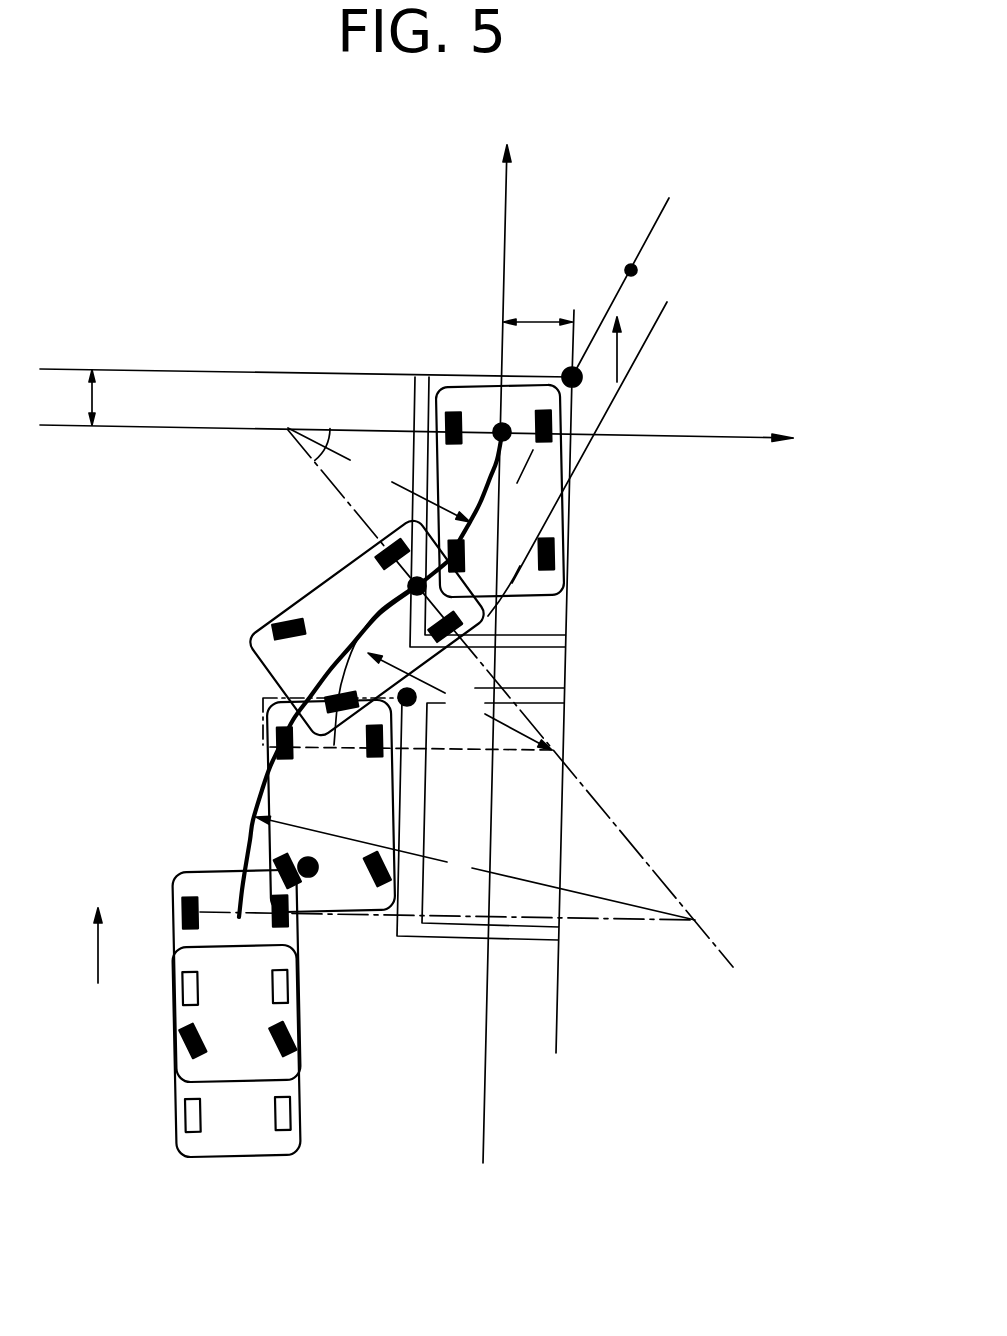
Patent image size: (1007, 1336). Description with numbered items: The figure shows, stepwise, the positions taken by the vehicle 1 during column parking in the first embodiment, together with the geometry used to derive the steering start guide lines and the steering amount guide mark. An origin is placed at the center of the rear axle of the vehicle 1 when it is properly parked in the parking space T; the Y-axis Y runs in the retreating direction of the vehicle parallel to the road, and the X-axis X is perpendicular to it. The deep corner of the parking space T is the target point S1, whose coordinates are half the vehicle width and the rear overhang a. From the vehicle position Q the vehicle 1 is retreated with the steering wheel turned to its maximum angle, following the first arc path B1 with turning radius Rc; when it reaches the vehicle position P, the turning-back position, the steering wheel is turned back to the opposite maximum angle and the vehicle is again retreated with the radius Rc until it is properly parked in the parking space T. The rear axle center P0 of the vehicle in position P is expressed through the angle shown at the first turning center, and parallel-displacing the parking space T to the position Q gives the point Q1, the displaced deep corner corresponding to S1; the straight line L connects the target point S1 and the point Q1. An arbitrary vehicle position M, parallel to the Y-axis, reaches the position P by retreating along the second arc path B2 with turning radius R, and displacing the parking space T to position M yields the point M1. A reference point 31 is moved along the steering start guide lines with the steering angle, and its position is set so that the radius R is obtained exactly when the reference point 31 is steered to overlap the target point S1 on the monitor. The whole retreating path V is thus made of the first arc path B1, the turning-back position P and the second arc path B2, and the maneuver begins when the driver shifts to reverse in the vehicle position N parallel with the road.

The vehicle 1 is at (565, 512).
The reference point 31 is at (631, 270).
The straight line L is at (657, 222).
The parking space T is at (565, 613).
The first arc path B1 is at (545, 538).
The second arc path B2 is at (268, 757).
The vehicle position P is at (262, 647).
The vehicle position Q is at (270, 712).
The vehicle position M is at (176, 917).
The vehicle position N is at (172, 1117).
The rear axle center P0 is at (412, 587).
The point Q1 is at (409, 706).
The point M1 is at (312, 876).
The target point S1 is at (546, 357).
The center of first turning circle C is at (504, 681).
The turning radius R is at (475, 868).
The turning radius Rc is at (420, 589).
The retreating path V is at (306, 673).
The X-axis X is at (416, 451).
The Y-axis Y is at (490, 654).
The rear overhang a is at (102, 397).